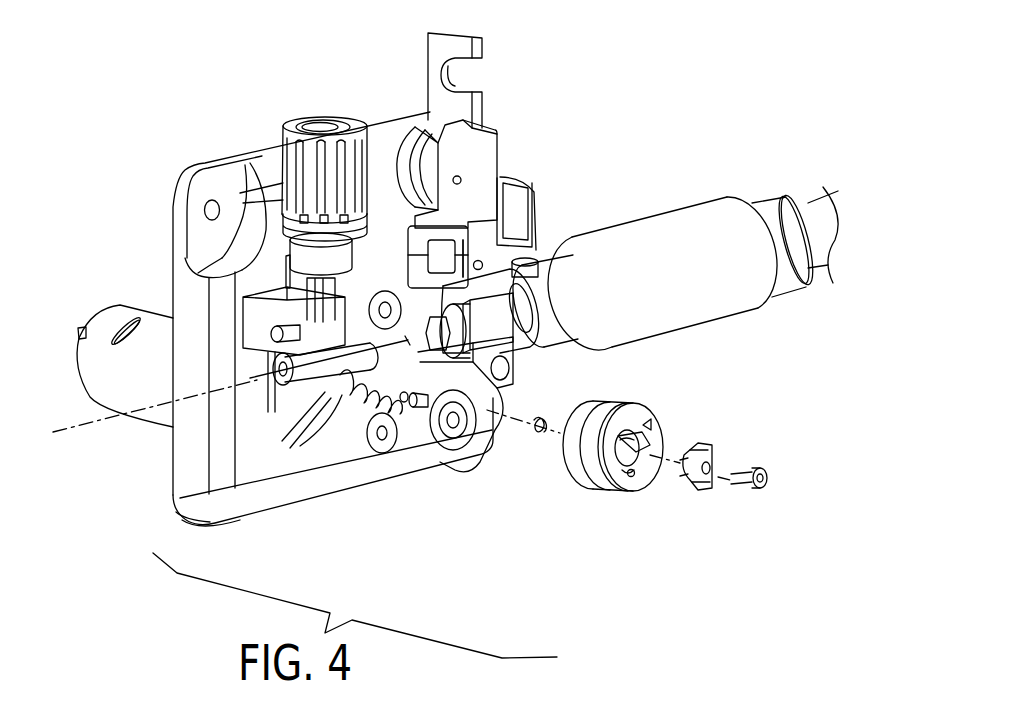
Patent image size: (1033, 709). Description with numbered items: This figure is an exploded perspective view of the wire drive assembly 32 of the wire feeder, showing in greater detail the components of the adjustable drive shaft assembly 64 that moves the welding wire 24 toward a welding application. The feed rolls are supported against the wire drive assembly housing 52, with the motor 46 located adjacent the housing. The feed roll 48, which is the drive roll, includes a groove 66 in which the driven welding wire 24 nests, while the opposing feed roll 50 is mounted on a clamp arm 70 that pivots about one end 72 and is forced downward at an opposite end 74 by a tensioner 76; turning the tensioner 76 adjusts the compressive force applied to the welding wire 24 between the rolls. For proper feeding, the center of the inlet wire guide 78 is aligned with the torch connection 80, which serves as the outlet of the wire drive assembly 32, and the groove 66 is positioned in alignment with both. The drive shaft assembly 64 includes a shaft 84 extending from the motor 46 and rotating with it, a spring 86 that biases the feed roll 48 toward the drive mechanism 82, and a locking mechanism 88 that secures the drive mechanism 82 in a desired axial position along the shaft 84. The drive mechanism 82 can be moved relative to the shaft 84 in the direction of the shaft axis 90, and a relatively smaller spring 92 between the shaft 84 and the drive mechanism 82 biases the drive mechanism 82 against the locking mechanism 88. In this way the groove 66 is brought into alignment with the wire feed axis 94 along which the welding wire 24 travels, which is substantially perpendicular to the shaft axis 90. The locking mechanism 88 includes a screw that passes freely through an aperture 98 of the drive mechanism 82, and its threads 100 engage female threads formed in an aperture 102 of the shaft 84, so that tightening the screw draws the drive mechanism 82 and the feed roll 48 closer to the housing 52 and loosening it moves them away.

The wire drive assembly 32 is at (284, 308).
The welding wire 24 is at (405, 337).
The motor 46 is at (95, 380).
The feed roll 48 is at (640, 490).
The feed roll 50 is at (410, 147).
The wire drive assembly housing 52 is at (187, 453).
The drive shaft assembly 64 is at (579, 378).
The groove 66 is at (566, 467).
The clamp arm 70 is at (482, 165).
The end 72 is at (487, 240).
The opposite end 74 is at (480, 100).
The tensioner 76 is at (290, 135).
The inlet wire guide 78 is at (328, 393).
The torch connection 80 is at (648, 215).
The drive mechanism 82 is at (702, 442).
The shaft 84 is at (398, 399).
The spring 86 is at (393, 397).
The locking mechanism 88 is at (760, 472).
The shaft axis 90 is at (673, 460).
The spring 92 is at (545, 418).
The wire feed axis 94 is at (93, 423).
The aperture 98 is at (708, 467).
The threads 100 is at (737, 480).
The aperture 102 is at (417, 407).